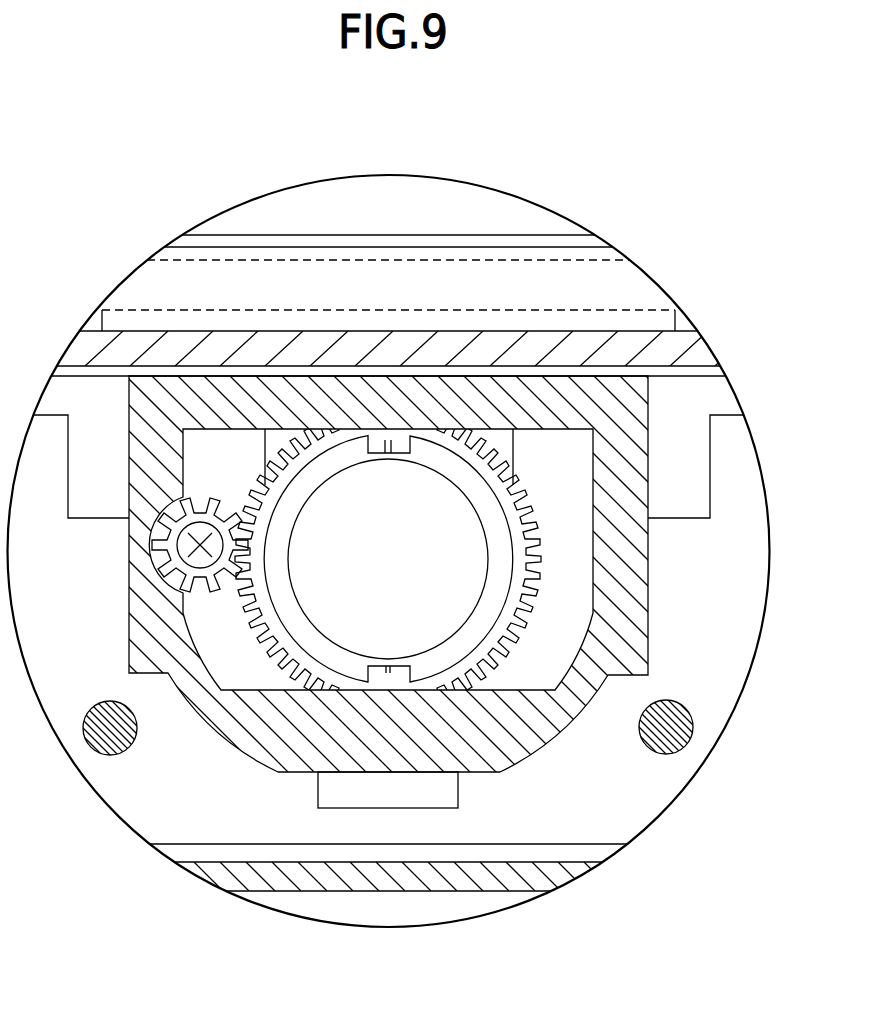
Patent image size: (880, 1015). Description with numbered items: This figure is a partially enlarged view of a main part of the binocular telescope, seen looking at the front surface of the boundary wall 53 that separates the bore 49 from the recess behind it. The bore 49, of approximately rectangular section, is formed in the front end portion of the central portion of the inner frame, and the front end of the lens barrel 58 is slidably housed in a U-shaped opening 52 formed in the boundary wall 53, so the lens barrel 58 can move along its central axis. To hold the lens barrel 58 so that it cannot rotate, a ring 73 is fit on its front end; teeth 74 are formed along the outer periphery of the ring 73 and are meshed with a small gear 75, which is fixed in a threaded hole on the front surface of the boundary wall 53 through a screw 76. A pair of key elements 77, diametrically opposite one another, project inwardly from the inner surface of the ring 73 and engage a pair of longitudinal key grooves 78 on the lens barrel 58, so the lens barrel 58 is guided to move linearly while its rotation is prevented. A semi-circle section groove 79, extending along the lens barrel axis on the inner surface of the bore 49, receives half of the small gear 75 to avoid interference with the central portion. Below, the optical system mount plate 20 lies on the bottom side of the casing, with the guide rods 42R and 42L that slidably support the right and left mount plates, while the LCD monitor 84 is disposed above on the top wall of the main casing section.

The LCD monitor 84 is at (425, 232).
The U-shaped opening 52 is at (267, 442).
The lens barrel 58 is at (443, 463).
The boundary wall 53 is at (200, 449).
The semi-circle section groove 79 is at (195, 500).
The key grooves 78 is at (385, 455).
The key elements 77 is at (395, 455).
The ring 73 is at (540, 506).
The teeth 74 is at (535, 533).
The bore 49 is at (586, 580).
The screw 76 is at (190, 568).
The small gear 75 is at (219, 598).
The guide rod 42R is at (133, 745).
The guide rod 42L is at (650, 752).
The optical system mount plate 20 is at (406, 897).